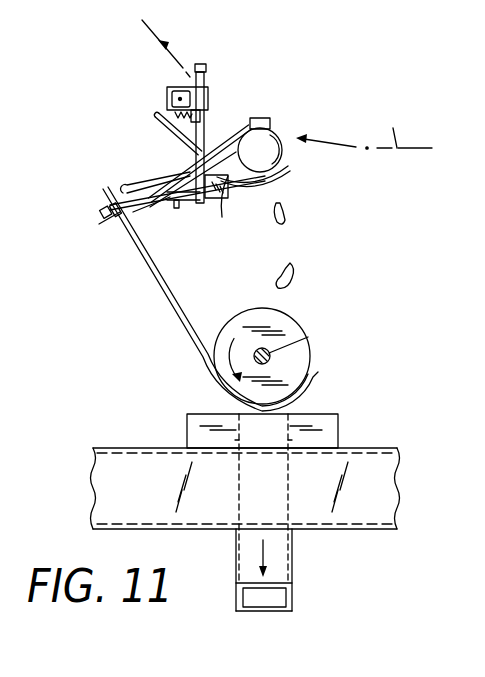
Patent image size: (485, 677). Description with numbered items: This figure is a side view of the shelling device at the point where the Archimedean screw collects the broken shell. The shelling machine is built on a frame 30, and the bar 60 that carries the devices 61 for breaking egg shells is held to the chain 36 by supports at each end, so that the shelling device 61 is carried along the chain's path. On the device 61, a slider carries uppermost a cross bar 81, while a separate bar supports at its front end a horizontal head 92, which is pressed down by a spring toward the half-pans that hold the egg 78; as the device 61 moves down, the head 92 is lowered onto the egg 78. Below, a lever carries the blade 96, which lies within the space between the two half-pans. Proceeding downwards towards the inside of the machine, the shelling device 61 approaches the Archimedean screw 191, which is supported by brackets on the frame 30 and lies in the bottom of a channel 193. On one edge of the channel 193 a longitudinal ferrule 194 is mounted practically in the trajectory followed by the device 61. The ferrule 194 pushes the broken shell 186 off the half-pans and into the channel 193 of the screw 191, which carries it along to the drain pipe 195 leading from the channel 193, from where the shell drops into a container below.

The frame 30 is at (142, 450).
The chain 36 is at (364, 123).
The bar 60 is at (178, 98).
The shelling device 61 is at (166, 142).
The egg 78 is at (278, 134).
The cross bar 81 is at (207, 73).
The horizontal head 92 is at (270, 122).
The blade 96 is at (252, 184).
The broken shell 186 is at (287, 223).
The Archimedean screw 191 is at (286, 325).
The channel 193 is at (150, 278).
The longitudinal ferrule 194 is at (238, 214).
The drain pipe 195 is at (292, 598).